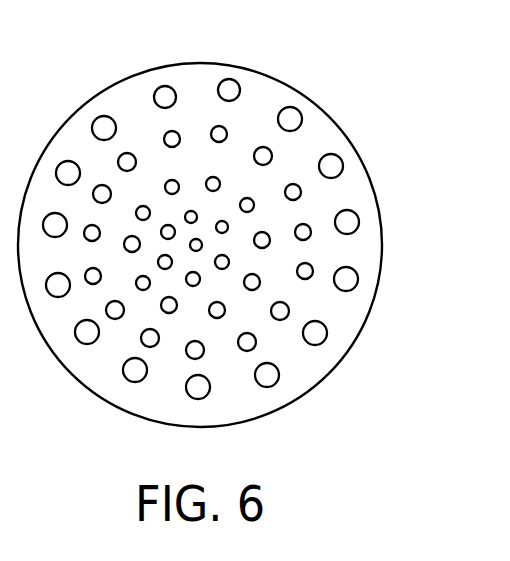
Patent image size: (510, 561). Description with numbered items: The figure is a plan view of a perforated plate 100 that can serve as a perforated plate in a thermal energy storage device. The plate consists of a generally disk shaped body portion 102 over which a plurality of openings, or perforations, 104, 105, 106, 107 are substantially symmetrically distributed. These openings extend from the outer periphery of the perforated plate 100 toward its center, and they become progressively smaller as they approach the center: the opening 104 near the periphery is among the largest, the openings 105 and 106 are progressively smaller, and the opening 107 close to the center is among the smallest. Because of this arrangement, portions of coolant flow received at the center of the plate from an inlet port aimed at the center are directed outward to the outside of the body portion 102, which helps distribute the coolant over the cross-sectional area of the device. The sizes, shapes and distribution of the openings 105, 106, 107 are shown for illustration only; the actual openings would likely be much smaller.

The perforated plate 100 is at (236, 221).
The disk shaped body portion 102 is at (313, 107).
The opening 104 is at (340, 157).
The opening 105 is at (312, 266).
The opening 106 is at (269, 235).
The opening 107 is at (227, 231).